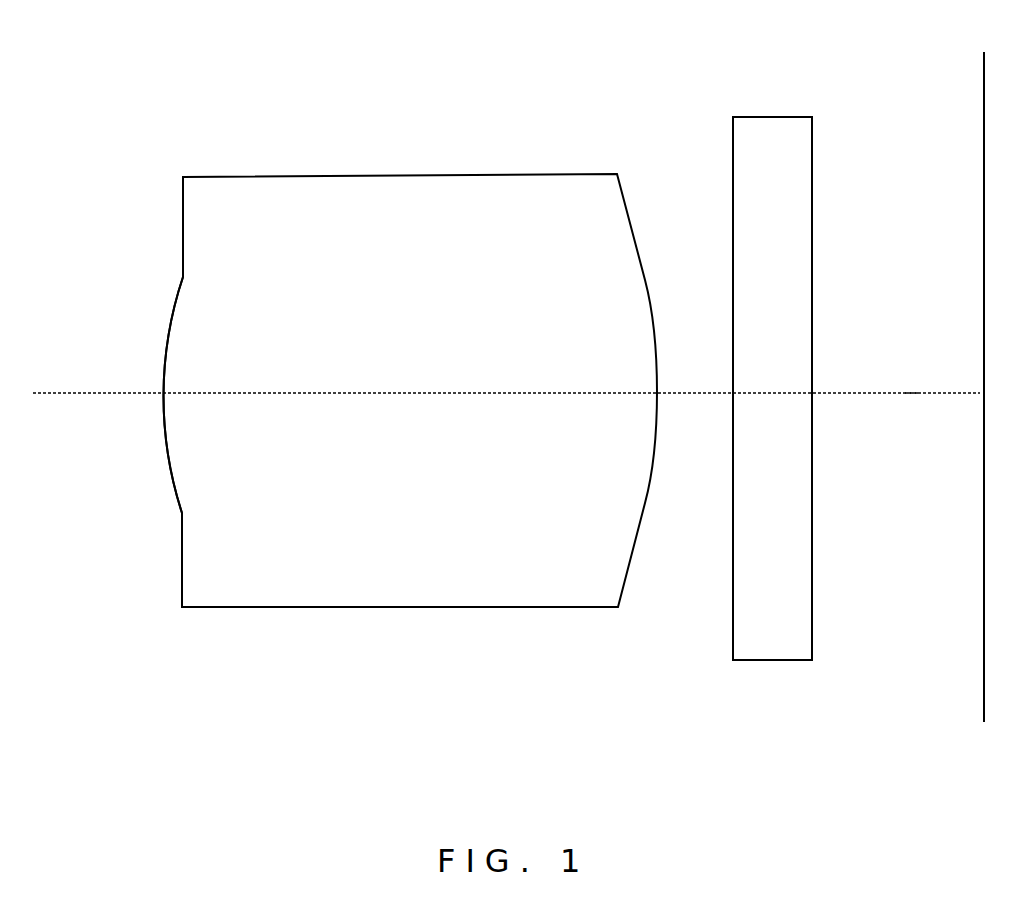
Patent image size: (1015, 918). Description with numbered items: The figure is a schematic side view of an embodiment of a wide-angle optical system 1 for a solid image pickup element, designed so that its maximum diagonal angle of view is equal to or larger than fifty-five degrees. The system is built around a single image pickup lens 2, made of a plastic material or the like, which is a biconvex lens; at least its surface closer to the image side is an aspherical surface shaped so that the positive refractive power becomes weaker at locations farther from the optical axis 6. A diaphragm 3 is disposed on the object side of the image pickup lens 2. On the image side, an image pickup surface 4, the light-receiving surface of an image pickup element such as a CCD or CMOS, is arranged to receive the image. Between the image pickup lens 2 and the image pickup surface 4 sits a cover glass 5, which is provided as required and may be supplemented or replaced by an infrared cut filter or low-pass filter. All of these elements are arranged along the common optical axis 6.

The wide-angle optical system 1 is at (77, 138).
The image pickup lens 2 is at (258, 175).
The diaphragm 3 is at (166, 303).
The image pickup surface 4 is at (982, 118).
The cover glass 5 is at (742, 117).
The optical axis 6 is at (913, 393).